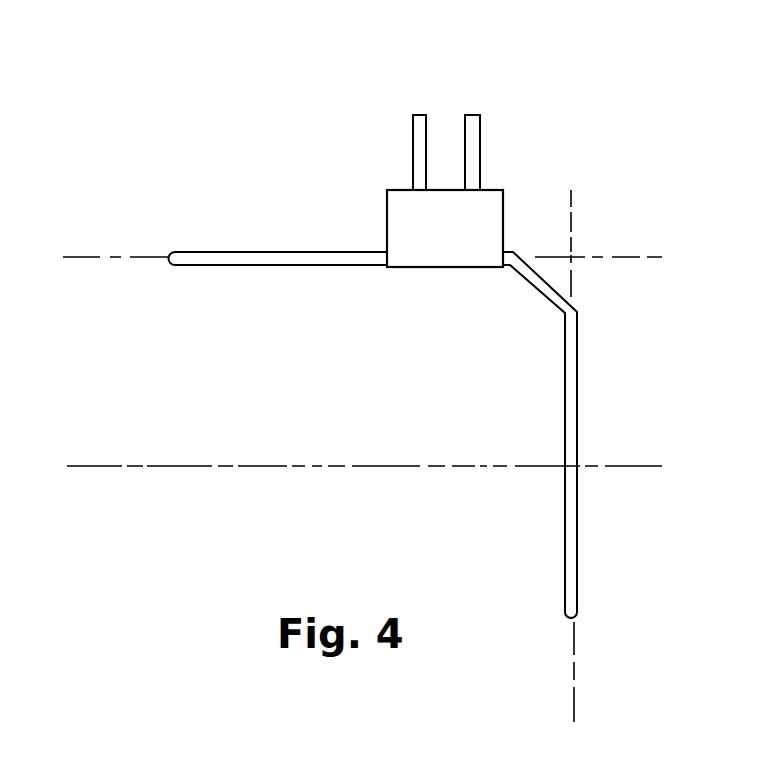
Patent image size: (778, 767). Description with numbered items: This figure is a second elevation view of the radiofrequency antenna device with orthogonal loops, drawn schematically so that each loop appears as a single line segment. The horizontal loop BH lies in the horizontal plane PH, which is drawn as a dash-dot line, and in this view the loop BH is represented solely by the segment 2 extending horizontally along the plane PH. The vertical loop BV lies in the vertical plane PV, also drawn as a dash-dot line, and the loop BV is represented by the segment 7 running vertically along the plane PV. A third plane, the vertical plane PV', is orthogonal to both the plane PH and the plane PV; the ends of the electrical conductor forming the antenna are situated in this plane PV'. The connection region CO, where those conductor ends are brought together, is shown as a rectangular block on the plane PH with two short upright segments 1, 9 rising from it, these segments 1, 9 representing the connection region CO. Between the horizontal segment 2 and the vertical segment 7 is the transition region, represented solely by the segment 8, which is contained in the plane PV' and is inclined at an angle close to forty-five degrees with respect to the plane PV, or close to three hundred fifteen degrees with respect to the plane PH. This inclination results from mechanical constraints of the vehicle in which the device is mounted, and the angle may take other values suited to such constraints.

The segment 1 is at (413, 153).
The segment 9 is at (480, 150).
The segment 2 is at (245, 253).
The segment 8 is at (537, 283).
The segment 7 is at (565, 428).
The connection region CO is at (423, 270).
The horizontal loop BH is at (317, 240).
The vertical loop BV is at (587, 370).
The horizontal plane PH is at (87, 258).
The vertical plane PV is at (535, 672).
The vertical plane PV' is at (511, 158).